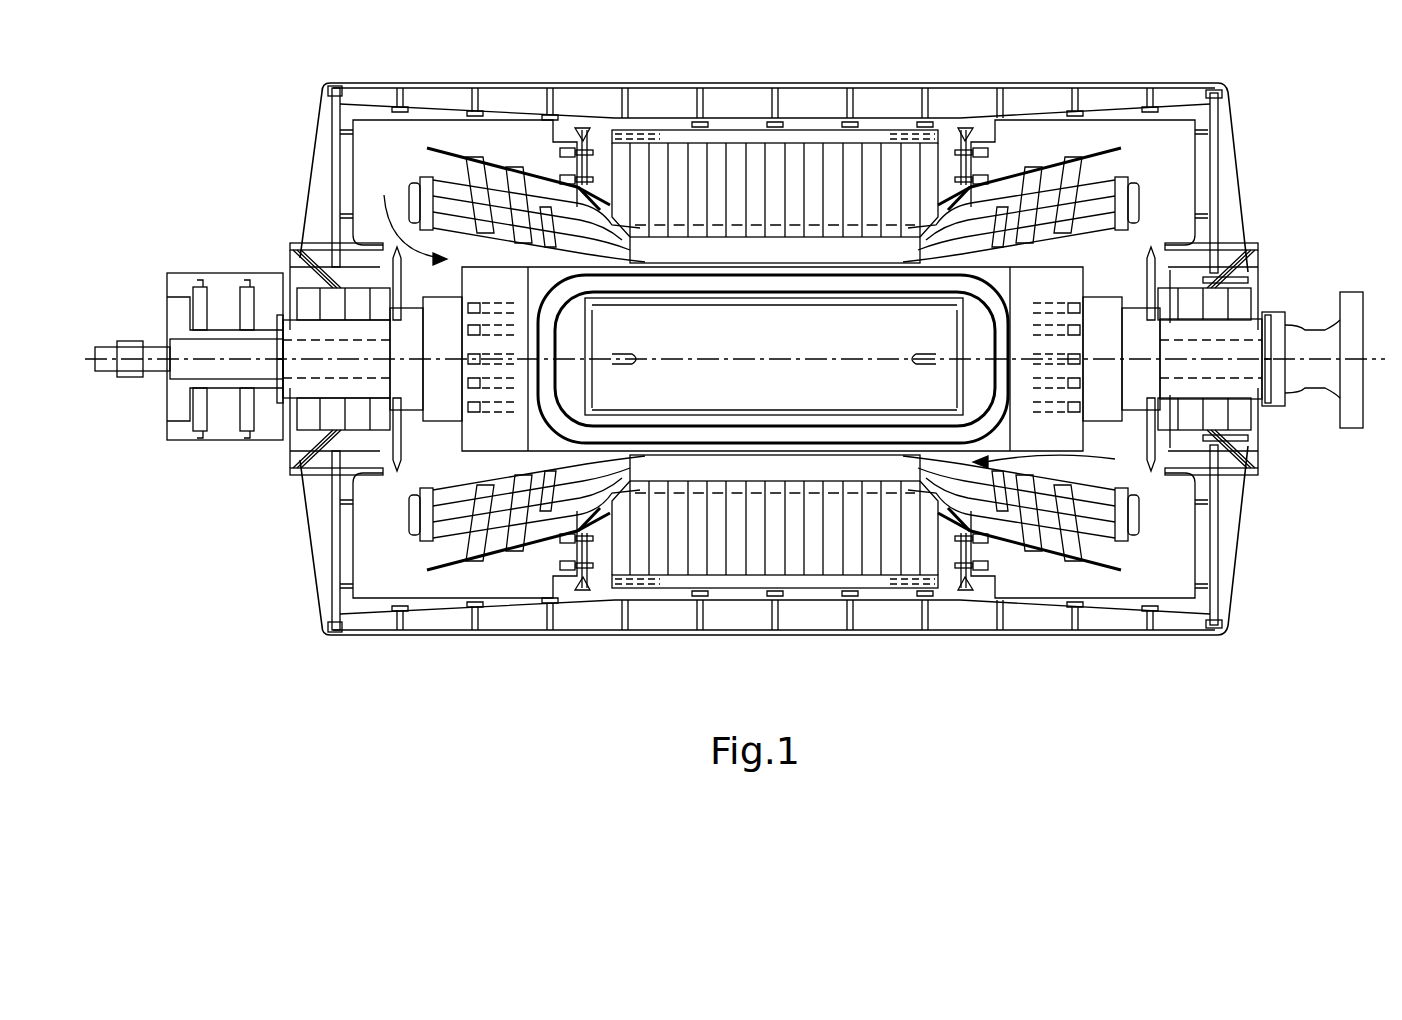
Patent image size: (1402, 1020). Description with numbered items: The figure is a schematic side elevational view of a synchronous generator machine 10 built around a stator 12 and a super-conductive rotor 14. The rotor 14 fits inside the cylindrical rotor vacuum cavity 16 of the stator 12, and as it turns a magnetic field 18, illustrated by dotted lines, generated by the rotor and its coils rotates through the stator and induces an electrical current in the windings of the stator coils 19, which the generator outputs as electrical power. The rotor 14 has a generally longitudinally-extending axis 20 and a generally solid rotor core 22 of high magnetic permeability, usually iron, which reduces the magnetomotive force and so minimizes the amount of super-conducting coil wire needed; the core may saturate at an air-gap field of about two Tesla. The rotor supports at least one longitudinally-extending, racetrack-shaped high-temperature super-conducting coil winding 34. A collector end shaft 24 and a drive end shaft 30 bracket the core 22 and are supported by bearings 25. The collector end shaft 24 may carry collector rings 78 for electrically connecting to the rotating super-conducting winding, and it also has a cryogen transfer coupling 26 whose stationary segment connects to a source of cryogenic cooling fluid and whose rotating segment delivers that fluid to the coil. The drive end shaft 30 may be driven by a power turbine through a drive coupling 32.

The synchronous generator machine 10 is at (439, 55).
The stator 12 is at (668, 171).
The rotor 14 is at (483, 443).
The rotor vacuum cavity 16 is at (754, 319).
The magnetic field 18 is at (878, 222).
The stator coils 19 is at (1103, 178).
The longitudinally-extending axis 20 is at (737, 331).
The rotor core 22 is at (707, 390).
The collector end shaft 24 is at (360, 338).
The bearings 25 is at (302, 463).
The cryogen transfer coupling 26 is at (140, 335).
The drive end shaft 30 is at (1235, 343).
The drive coupling 32 is at (1358, 432).
The HTS coil winding 34 is at (1022, 270).
The collector rings 78 is at (235, 427).